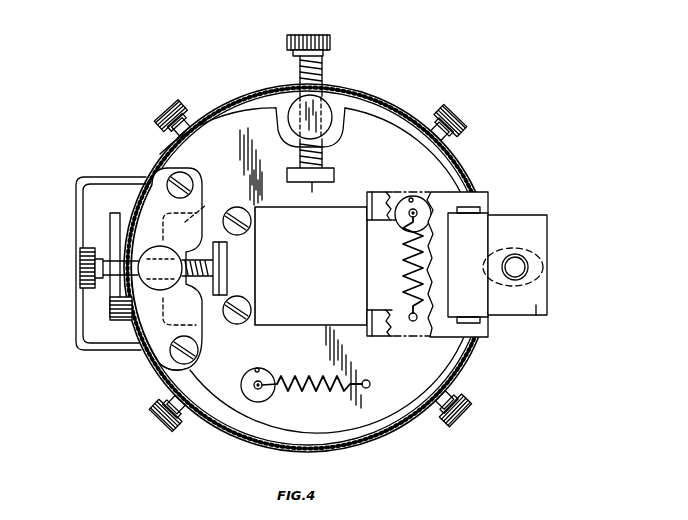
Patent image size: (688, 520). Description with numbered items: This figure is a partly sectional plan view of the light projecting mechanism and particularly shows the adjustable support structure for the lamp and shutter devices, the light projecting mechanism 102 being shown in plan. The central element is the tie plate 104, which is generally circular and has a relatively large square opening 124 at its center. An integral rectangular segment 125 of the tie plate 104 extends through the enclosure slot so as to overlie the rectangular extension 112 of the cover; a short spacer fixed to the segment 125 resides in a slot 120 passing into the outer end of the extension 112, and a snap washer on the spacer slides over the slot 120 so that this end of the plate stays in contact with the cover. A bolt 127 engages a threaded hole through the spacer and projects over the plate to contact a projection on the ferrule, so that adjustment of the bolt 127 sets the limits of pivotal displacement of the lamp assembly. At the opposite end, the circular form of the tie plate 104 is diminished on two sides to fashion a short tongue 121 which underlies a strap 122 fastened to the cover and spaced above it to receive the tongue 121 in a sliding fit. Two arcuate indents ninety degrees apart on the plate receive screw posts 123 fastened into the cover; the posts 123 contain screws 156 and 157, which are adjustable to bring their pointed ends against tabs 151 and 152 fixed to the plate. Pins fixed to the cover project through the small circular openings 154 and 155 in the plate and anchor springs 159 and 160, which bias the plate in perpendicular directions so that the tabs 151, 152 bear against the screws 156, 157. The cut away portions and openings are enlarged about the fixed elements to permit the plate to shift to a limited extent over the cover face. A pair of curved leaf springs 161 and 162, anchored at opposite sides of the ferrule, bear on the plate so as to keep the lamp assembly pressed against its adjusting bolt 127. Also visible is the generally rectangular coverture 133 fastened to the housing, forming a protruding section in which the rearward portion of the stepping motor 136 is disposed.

The battery 102 is at (473, 290).
The tie plate 104 is at (368, 125).
The rectangular extension 112 is at (536, 310).
The slot 120 is at (547, 258).
The tongue 121 is at (200, 215).
The strap 122 is at (157, 330).
The screw posts 123 is at (300, 103).
The square opening 124 is at (292, 209).
The rectangular segment 125 is at (523, 227).
The bolt 127 is at (520, 270).
The coverture 133 is at (76, 212).
The stepping motor 136 is at (127, 220).
The tab 151 is at (227, 265).
The tab 152 is at (316, 181).
The circular opening 154 is at (257, 368).
The circular opening 155 is at (411, 198).
The screw 156 is at (80, 265).
The screw 157 is at (331, 43).
The spring 159 is at (316, 396).
The spring 160 is at (411, 270).
The curved leaf spring 161 is at (378, 192).
The curved leaf spring 162 is at (383, 337).